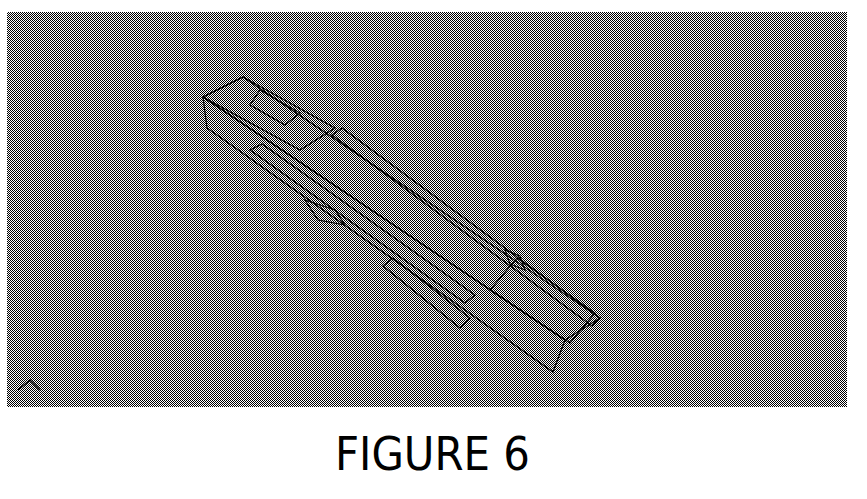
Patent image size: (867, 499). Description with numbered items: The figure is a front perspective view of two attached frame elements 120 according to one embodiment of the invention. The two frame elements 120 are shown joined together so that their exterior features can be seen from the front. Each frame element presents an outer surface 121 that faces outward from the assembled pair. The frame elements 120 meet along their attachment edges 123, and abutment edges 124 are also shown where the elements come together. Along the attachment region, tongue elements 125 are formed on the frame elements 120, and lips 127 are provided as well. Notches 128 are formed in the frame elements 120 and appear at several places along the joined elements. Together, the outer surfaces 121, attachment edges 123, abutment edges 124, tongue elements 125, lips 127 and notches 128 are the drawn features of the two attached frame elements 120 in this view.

The frame element 120 is at (470, 252).
The outer surface 121 is at (437, 272).
The attachment edge 123 is at (335, 217).
The abutment edge 124 is at (560, 337).
The tongue element 125 is at (410, 173).
The lip 127 is at (517, 258).
The notch 128 is at (300, 198).